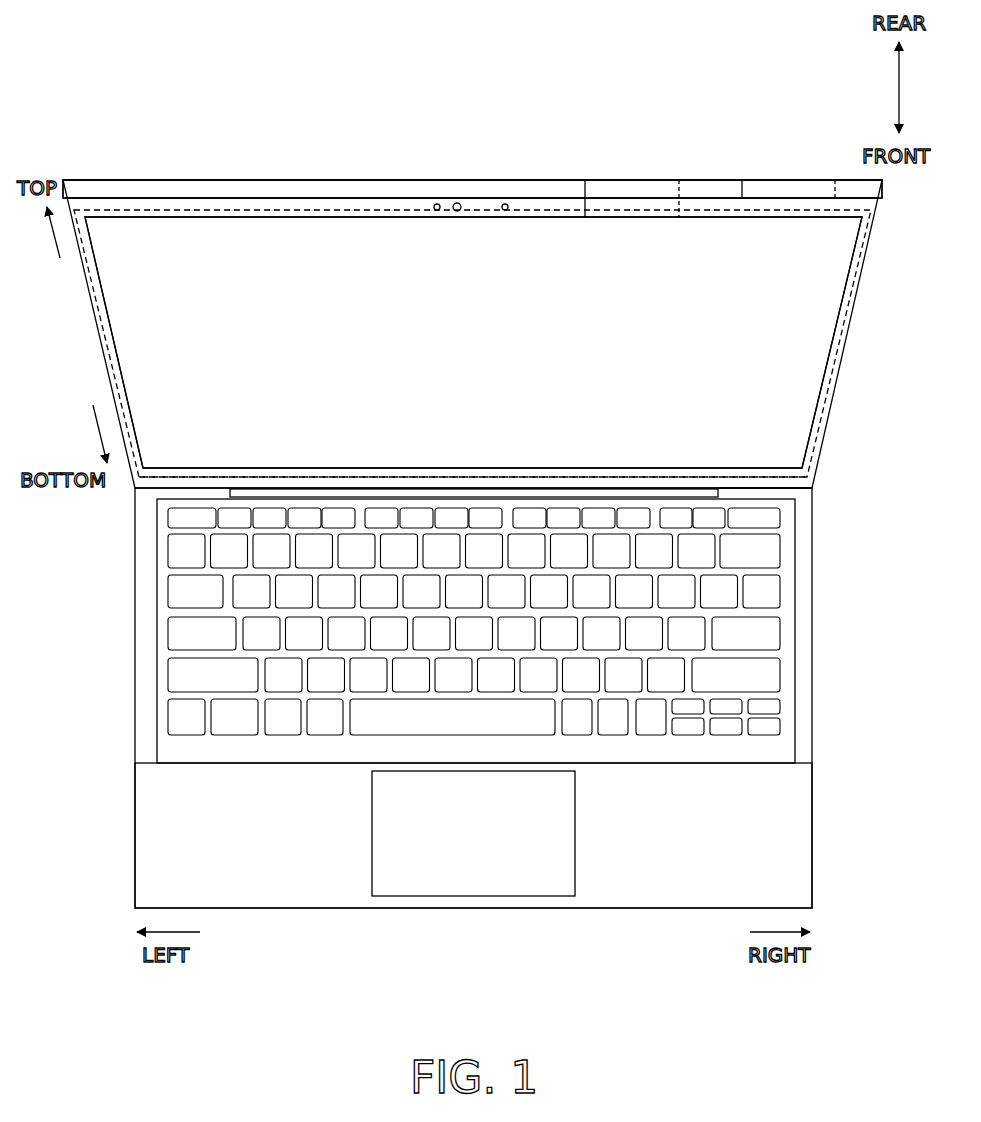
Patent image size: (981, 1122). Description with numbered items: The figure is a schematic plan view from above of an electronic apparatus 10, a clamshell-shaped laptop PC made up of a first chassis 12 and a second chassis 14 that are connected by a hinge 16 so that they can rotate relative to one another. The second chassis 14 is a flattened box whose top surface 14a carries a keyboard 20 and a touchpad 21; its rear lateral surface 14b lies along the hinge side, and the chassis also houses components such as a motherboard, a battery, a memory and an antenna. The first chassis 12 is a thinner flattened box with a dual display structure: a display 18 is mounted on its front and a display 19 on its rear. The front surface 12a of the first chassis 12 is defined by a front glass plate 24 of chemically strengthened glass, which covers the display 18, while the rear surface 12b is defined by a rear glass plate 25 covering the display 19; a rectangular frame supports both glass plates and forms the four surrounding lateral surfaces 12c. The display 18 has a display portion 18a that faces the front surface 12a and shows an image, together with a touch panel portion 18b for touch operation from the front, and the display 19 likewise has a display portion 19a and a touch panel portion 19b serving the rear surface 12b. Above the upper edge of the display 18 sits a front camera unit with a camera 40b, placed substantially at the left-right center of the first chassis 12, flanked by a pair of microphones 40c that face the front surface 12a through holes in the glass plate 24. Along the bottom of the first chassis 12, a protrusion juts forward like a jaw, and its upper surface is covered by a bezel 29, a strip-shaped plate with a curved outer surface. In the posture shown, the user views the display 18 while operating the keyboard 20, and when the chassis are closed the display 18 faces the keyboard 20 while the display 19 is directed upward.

The electronic apparatus 10 is at (479, 508).
The first chassis 12 is at (867, 263).
The front surface 12a is at (190, 242).
The glass plate 24 is at (473, 342).
The rear surface 12b is at (407, 182).
The glass plate 25 is at (472, 189).
The lateral surfaces 12c is at (291, 190).
The second chassis 14 is at (826, 665).
The top surface 14a is at (155, 818).
The rear lateral surface 14b is at (770, 490).
The hinge 16 is at (541, 486).
The display 18 is at (710, 128).
The display portion 18a is at (583, 258).
The touch panel portion 18b is at (675, 258).
The display 19 is at (870, 86).
The display portion 19a is at (742, 180).
The touch panel portion 19b is at (835, 180).
The keyboard 20 is at (615, 752).
The touchpad 21 is at (444, 877).
The bezel 29 is at (441, 489).
The camera 40b is at (457, 212).
The microphones 40c is at (437, 212).